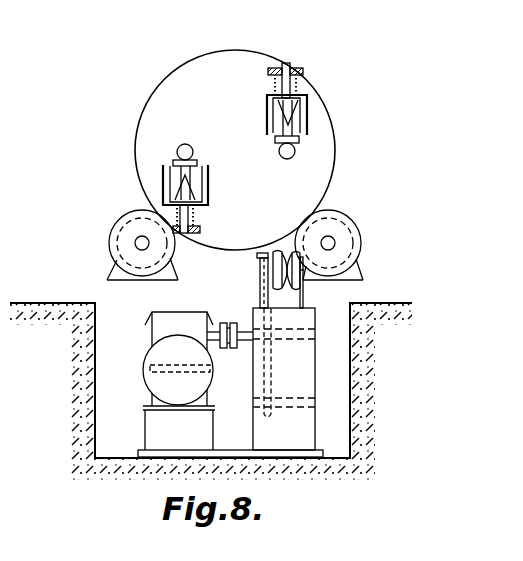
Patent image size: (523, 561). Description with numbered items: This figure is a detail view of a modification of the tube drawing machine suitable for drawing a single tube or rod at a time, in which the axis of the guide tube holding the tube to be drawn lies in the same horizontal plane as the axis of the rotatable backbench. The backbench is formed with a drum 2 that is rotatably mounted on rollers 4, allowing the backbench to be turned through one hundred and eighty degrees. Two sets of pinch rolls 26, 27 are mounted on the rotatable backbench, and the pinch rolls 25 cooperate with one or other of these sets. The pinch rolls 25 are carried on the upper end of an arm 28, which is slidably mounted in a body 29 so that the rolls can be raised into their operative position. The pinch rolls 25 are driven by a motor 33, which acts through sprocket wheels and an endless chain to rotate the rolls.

The drum 2 is at (323, 163).
The roller 4 is at (110, 231).
The pinch roll 25 is at (303, 286).
The pinch rolls 26 is at (170, 168).
The pinch rolls 27 is at (305, 107).
The arm 28 is at (310, 306).
The body 29 is at (303, 379).
The motor 33 is at (198, 381).